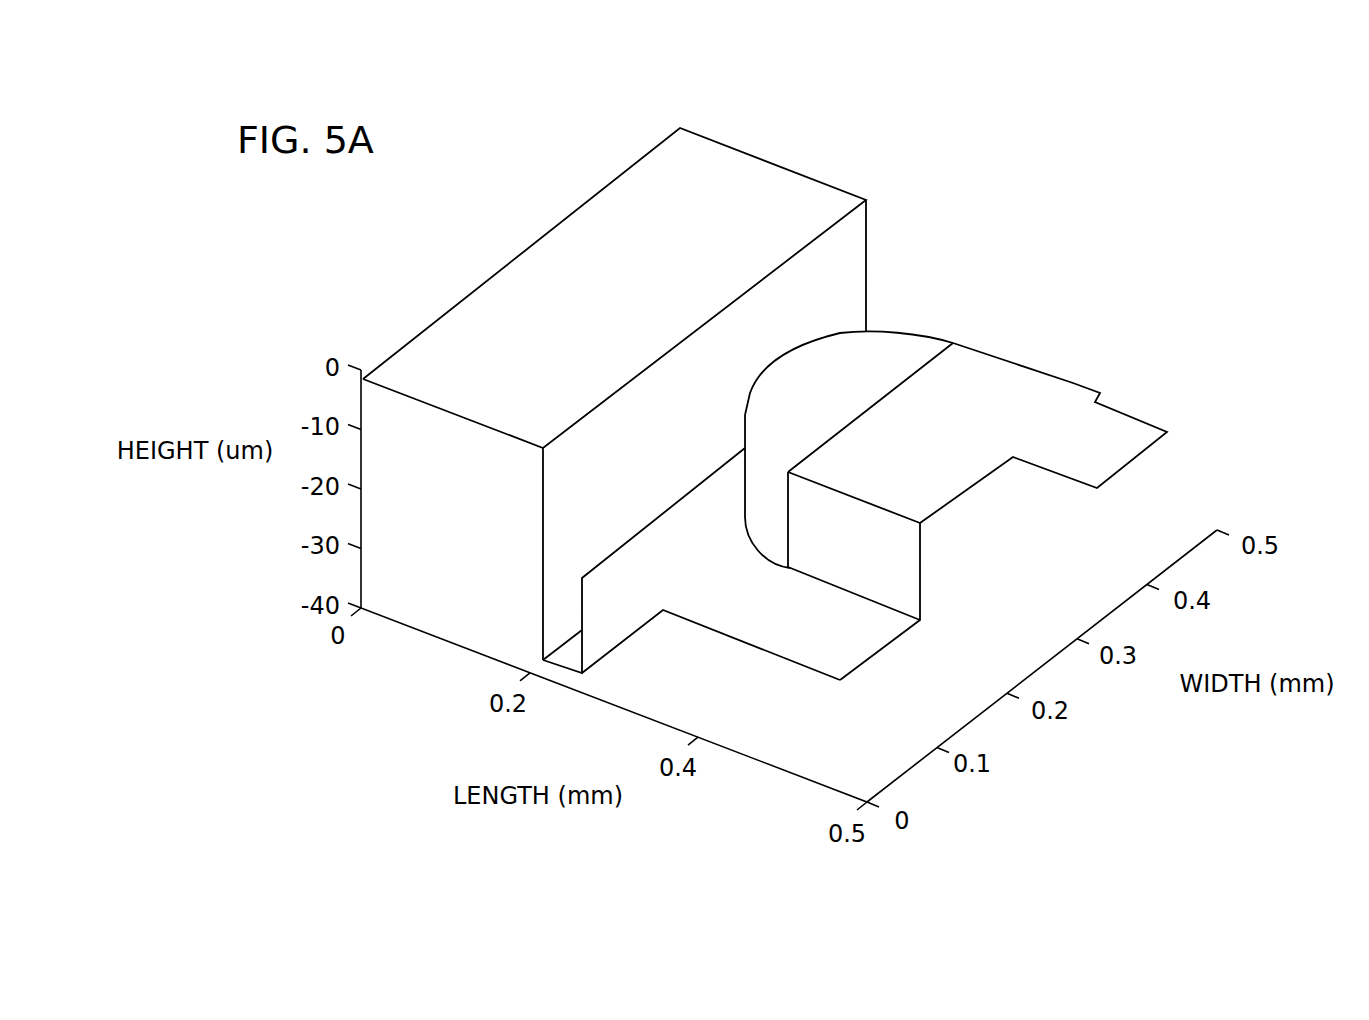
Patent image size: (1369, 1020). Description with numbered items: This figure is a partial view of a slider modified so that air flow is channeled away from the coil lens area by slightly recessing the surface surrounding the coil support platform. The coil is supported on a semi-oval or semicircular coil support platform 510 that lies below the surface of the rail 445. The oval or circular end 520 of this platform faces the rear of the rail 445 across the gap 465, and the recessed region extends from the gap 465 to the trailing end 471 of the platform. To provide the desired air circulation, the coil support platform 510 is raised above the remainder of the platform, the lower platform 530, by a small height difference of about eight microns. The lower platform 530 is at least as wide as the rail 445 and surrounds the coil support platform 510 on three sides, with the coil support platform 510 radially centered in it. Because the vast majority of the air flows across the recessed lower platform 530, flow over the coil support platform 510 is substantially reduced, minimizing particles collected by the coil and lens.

The rail 445 is at (770, 160).
The gap 465 is at (940, 238).
The oval or circular end 520 is at (866, 302).
The coil support platform 510 is at (1075, 380).
The lower platform 530 is at (813, 670).
The trailing end 471 is at (892, 641).